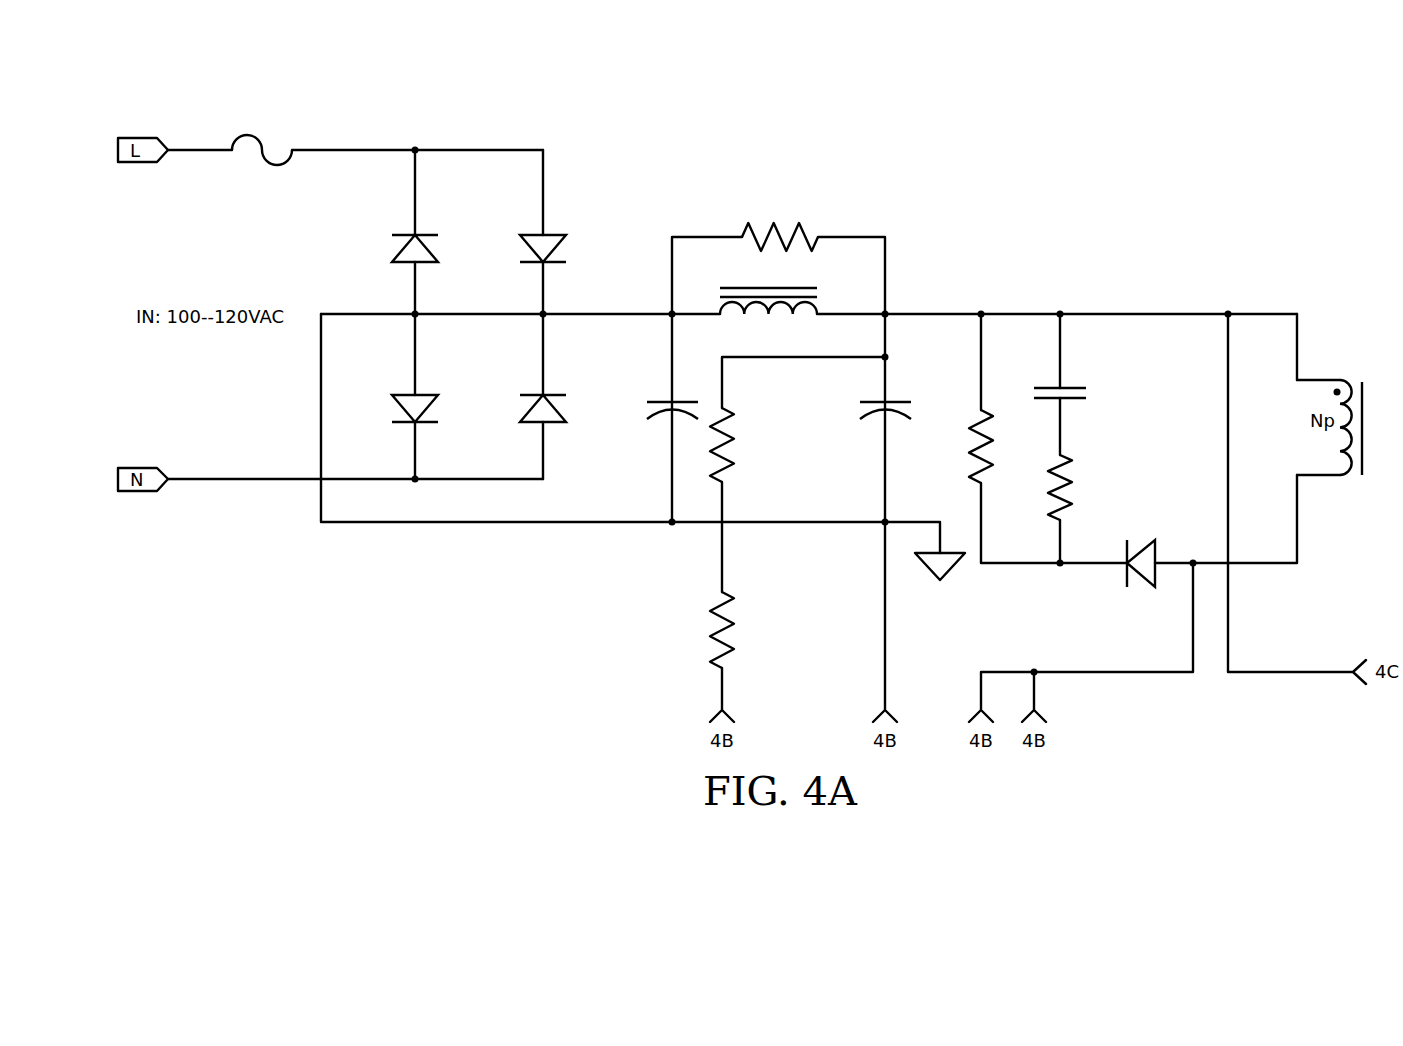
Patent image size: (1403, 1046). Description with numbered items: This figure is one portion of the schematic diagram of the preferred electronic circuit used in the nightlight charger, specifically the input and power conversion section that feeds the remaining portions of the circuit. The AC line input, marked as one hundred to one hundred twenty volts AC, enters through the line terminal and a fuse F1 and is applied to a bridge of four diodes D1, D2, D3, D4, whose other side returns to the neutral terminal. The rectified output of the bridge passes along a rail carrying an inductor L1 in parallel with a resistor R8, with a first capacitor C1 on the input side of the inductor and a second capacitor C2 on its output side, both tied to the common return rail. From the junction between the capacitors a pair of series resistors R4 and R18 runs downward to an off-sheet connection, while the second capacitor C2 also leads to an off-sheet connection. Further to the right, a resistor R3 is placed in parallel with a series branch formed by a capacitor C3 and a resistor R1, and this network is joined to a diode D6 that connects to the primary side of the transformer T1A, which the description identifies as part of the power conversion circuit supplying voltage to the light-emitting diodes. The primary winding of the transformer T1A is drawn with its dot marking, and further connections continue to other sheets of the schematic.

The fuse 10R 1WS F1 is at (277, 151).
The rectifier diode IN4007 D1 is at (578, 248).
The rectifier diode IN4007 D2 is at (578, 410).
The rectifier diode IN4007 D3 is at (450, 248).
The rectifier diode IN4007 D4 is at (450, 410).
The resistor 2K R8 is at (764, 225).
The inductor 1.5mH L1 is at (770, 289).
The electrolytic capacitor 4.7uF/250V C1 is at (670, 448).
The electrolytic capacitor 4.7uF/250V C2 is at (883, 448).
The resistor 1.5M R4 is at (744, 428).
The resistor 1.5M R18 is at (744, 614).
The resistor 200K R3 is at (1005, 446).
The capacitor 222M/1KV C3 is at (1102, 396).
The resistor 100R R1 is at (1085, 488).
The diode FR107 D6 is at (1156, 589).
The transformer T1A is at (1358, 415).